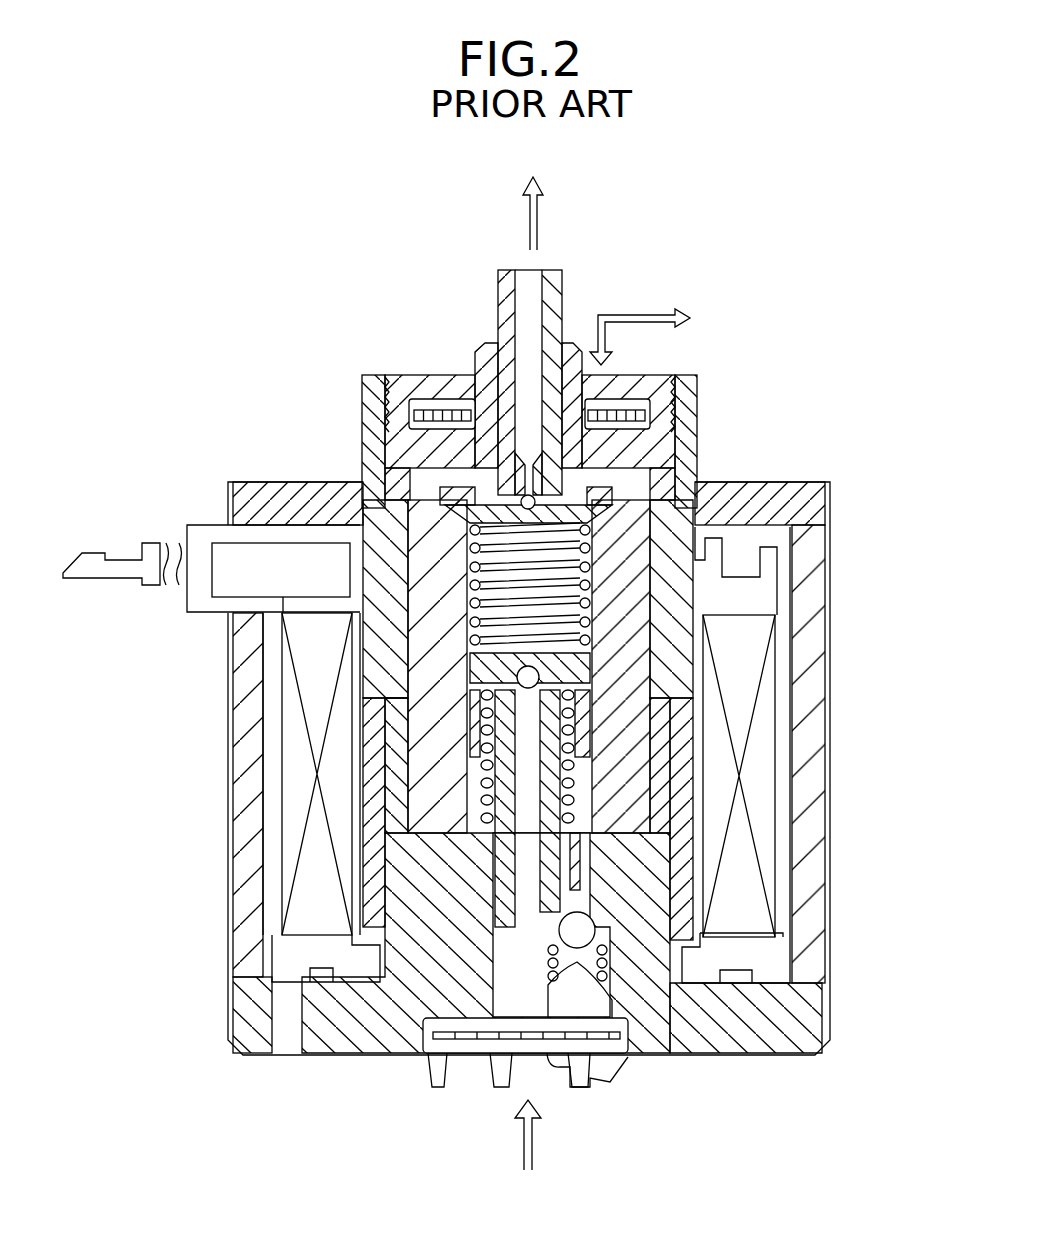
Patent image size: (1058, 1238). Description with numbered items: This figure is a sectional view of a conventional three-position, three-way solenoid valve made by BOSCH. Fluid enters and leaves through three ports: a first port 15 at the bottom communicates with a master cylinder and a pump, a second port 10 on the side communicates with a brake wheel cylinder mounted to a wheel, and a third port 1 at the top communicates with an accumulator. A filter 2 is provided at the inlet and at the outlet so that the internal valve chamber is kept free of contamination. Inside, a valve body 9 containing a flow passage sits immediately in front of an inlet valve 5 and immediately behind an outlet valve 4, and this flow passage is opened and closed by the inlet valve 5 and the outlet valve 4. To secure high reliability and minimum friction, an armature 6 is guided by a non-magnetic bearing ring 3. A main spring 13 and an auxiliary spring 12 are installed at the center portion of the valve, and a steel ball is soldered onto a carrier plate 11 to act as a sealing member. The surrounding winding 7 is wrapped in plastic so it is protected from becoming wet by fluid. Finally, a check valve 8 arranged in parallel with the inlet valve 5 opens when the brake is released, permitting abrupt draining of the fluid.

The third port 1 is at (527, 292).
The filter 2 is at (440, 410).
The non-magnetic bearing ring 3 is at (527, 506).
The outlet valve 4 is at (468, 540).
The inlet valve 5 is at (408, 695).
The armature 6 is at (432, 720).
The winding 7 is at (287, 880).
The check valve 8 is at (580, 948).
The valve body 9 is at (556, 298).
The second port 10 is at (620, 385).
The carrier plate 11 is at (617, 503).
The auxiliary spring 12 is at (590, 582).
The main spring 13 is at (572, 773).
The first port 15 is at (548, 1060).